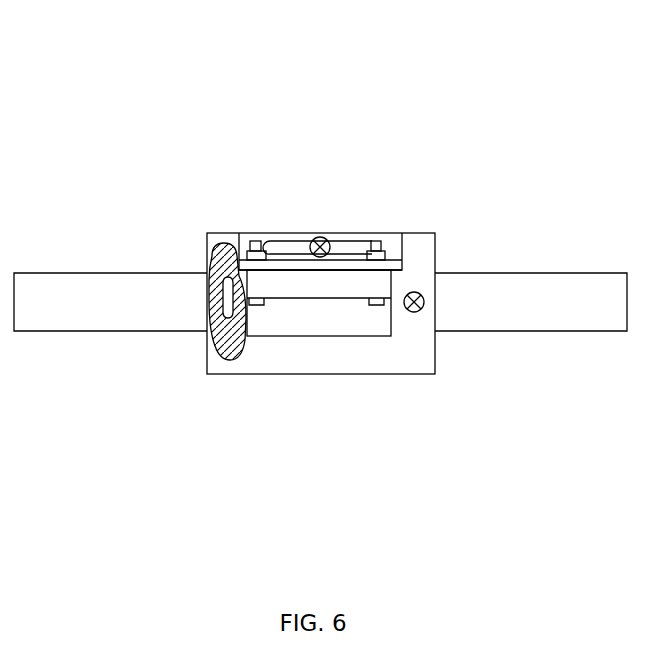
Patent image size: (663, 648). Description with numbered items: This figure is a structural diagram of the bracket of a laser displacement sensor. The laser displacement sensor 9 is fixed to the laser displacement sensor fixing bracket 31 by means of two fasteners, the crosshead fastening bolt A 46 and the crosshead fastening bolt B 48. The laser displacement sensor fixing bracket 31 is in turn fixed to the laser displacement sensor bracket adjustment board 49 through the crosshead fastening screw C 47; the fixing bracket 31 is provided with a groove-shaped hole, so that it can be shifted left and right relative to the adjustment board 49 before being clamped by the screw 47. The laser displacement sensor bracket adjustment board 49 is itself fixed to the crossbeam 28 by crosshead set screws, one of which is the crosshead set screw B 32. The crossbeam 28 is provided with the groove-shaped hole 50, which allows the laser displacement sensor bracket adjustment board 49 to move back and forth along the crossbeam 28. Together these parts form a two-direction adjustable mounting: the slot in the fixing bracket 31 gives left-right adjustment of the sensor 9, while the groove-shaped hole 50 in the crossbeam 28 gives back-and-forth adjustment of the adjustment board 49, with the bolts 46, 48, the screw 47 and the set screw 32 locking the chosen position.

The crossbeam 28 is at (115, 292).
The laser displacement sensor bracket adjustment board 49 is at (333, 355).
The crosshead fastening bolt B 48 is at (377, 240).
The crosshead fastening bolt A 46 is at (250, 241).
The laser displacement sensor fixing bracket 31 is at (400, 243).
The crosshead fastening screw C 47 is at (317, 239).
The laser displacement sensor 9 is at (357, 287).
The crosshead set screw B 32 is at (416, 309).
The groove-shaped hole 50 is at (226, 320).